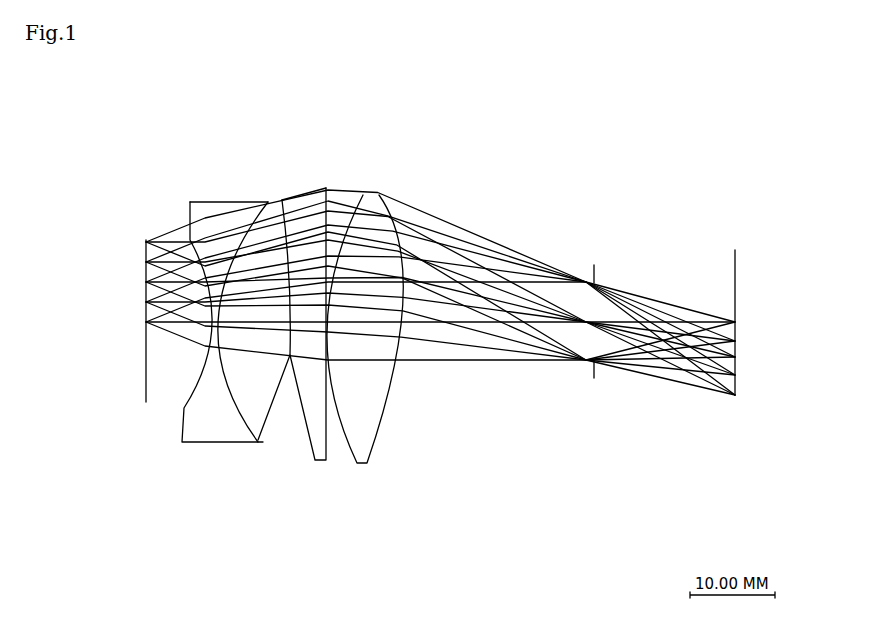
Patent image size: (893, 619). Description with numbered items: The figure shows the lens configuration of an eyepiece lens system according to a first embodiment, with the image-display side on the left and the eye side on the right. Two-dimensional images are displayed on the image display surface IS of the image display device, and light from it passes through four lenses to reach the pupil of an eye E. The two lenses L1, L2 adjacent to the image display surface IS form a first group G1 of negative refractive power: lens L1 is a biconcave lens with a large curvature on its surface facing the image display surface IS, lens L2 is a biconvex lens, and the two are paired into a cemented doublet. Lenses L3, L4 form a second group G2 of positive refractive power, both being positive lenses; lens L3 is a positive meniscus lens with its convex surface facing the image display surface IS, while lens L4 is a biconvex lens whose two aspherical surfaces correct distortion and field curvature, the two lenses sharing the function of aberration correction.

The image display surface IS is at (146, 402).
The lens L1 is at (218, 433).
The lens L2 is at (276, 349).
The lens L3 is at (323, 194).
The lens L4 is at (365, 195).
The first group G1 is at (241, 376).
The second group G2 is at (357, 263).
The pupil of an eye E is at (597, 275).